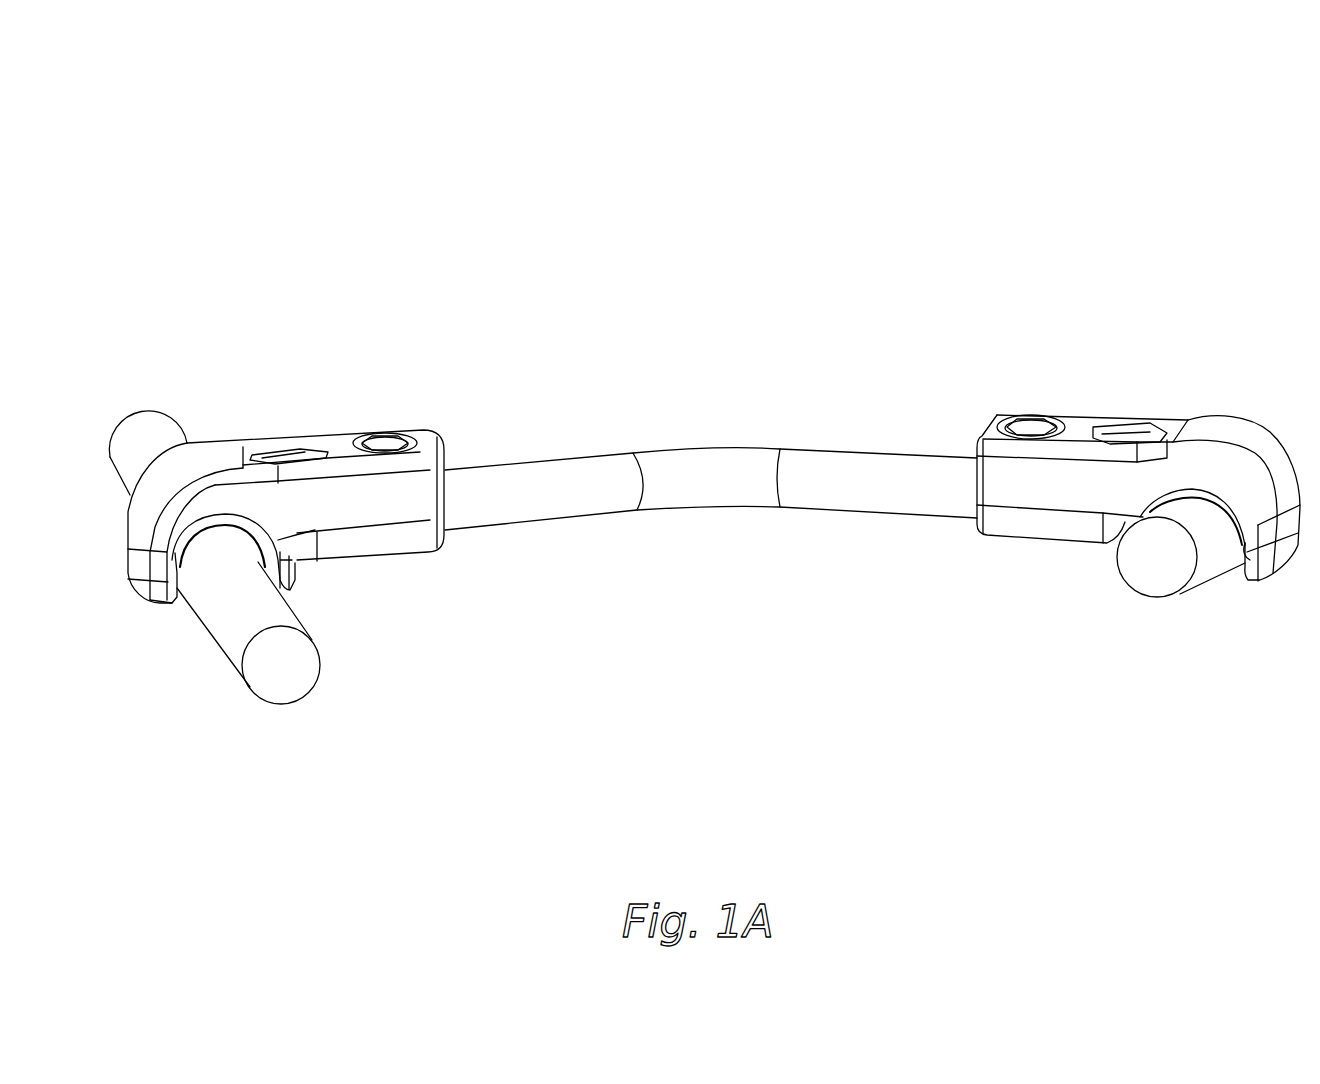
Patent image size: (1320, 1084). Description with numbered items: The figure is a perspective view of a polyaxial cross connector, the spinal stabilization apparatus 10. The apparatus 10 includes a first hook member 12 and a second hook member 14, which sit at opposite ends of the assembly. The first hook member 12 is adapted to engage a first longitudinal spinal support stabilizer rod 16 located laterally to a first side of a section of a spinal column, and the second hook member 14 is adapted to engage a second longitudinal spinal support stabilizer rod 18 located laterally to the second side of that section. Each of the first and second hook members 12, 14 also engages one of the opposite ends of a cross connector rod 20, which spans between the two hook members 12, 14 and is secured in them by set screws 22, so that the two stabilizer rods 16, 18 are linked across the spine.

The spinal stabilization apparatus 10 is at (1082, 157).
The first hook member 12 is at (242, 443).
The second hook member 14 is at (1185, 417).
The first longitudinal spinal support stabilizer rod 16 is at (287, 672).
The second longitudinal spinal support stabilizer rod 18 is at (1152, 565).
The cross connector rod 20 is at (862, 457).
The set screws 22 is at (390, 437).